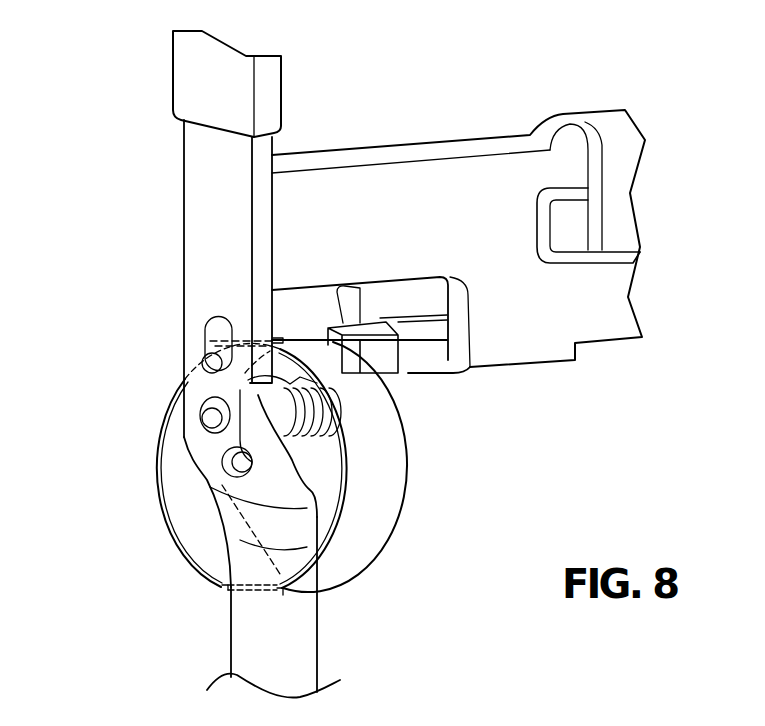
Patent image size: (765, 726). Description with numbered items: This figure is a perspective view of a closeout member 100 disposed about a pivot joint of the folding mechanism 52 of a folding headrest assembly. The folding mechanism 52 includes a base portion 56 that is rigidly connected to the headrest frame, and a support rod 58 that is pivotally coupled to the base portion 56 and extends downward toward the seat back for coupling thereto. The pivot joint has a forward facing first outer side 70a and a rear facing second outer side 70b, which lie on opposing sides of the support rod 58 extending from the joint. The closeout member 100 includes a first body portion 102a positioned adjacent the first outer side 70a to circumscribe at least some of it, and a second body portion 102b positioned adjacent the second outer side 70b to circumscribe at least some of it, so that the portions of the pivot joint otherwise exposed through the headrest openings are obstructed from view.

The folding mechanism 52 is at (214, 191).
The base portion 56 is at (408, 192).
The support rods 58 is at (290, 660).
The first outer side 70a is at (320, 458).
The second outer side 70b is at (202, 414).
The closeout member 100 is at (289, 468).
The first body portion 102a is at (380, 498).
The second body portion 102b is at (203, 510).